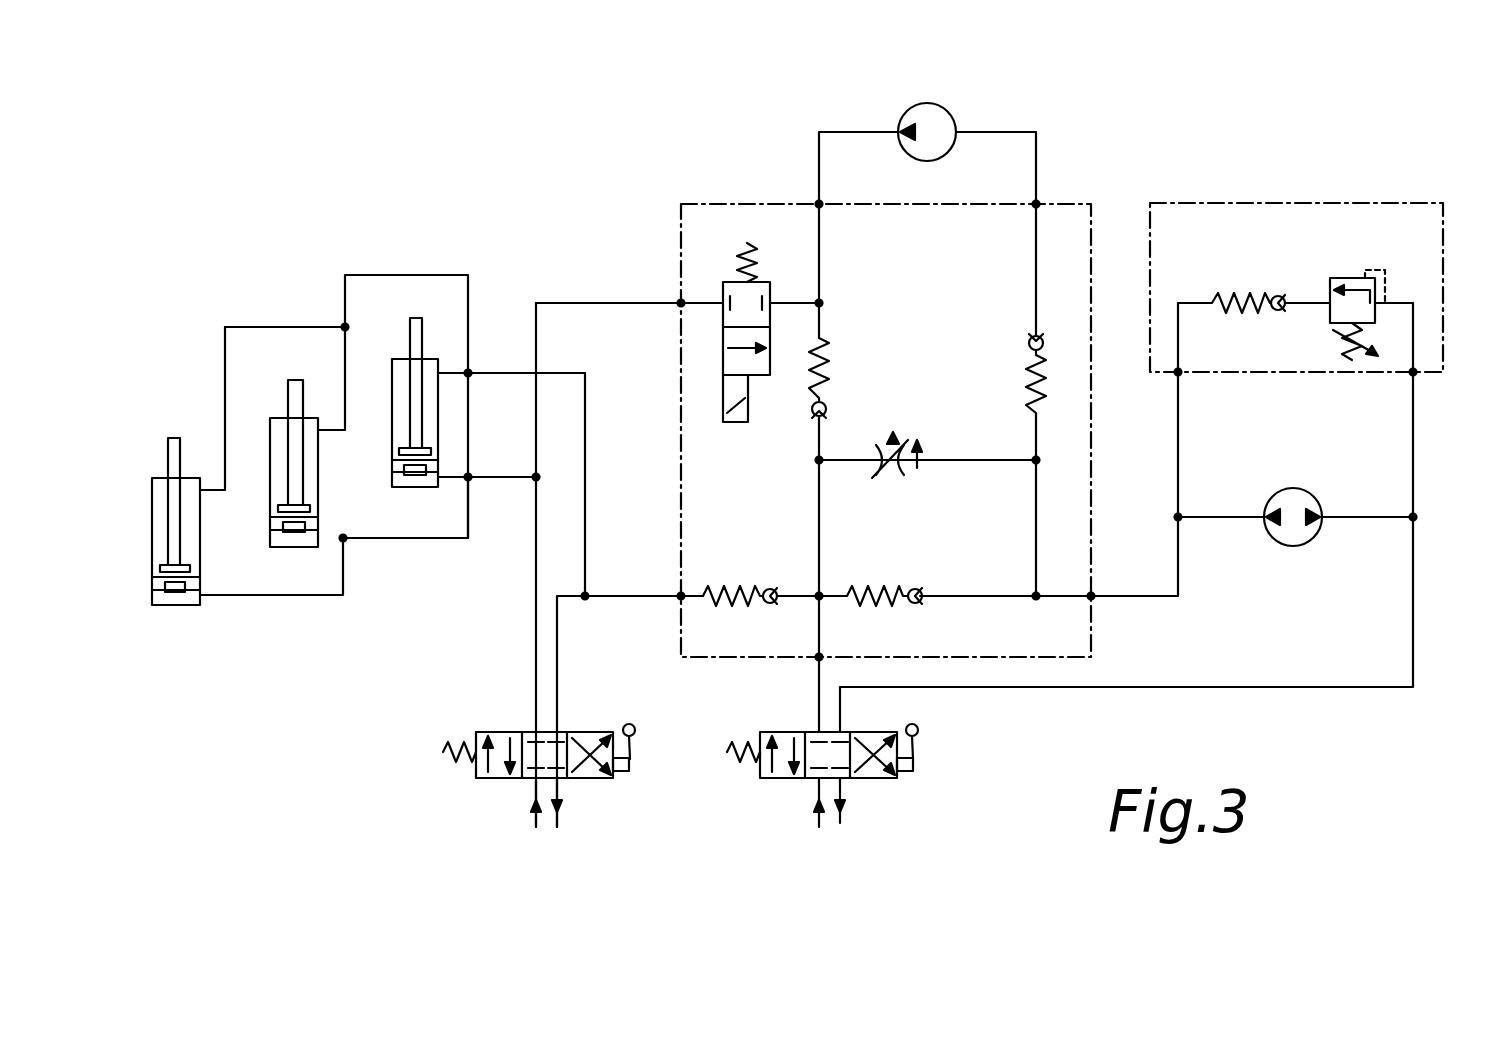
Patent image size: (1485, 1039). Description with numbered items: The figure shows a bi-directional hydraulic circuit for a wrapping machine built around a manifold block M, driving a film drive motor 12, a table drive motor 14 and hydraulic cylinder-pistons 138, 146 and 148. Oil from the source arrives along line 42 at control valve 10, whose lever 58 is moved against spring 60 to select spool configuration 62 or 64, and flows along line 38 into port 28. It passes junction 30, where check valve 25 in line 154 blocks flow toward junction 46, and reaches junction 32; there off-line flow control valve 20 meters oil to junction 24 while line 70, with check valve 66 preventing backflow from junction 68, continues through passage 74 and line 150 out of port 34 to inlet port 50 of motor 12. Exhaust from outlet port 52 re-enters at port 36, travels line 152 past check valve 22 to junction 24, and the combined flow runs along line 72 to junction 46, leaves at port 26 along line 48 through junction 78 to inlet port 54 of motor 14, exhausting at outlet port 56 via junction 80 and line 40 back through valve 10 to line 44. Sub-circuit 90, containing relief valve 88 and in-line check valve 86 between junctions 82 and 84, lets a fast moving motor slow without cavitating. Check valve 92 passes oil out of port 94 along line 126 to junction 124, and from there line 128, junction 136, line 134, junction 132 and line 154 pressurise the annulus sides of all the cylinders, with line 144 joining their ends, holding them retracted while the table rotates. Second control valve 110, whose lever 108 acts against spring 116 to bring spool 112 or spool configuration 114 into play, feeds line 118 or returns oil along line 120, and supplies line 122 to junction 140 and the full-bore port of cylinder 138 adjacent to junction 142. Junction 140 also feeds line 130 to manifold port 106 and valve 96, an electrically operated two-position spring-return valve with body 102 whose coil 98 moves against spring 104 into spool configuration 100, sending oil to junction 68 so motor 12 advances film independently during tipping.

The control valve 10 is at (872, 780).
The film drive motor 12 is at (945, 111).
The table drive motor 14 is at (1313, 496).
The off-line flow control valve 20 is at (918, 448).
The check valve 22 is at (1030, 392).
The junction 24 is at (1040, 463).
The check valve 25 is at (920, 590).
The manifold port 26 is at (1095, 592).
The manifold port 28 is at (817, 657).
The junction 30 is at (822, 592).
The junction 32 is at (815, 462).
The manifold port 34 is at (886, 404).
The manifold port 36 is at (1040, 203).
The line 38 is at (818, 696).
The line 40 is at (1208, 687).
The line 42 is at (812, 822).
The line 44 is at (843, 822).
The junction 46 is at (1035, 590).
The line 48 is at (1185, 596).
The inlet port 50 is at (900, 128).
The outlet port 52 is at (960, 127).
The inlet port 54 is at (1262, 508).
The outlet port 56 is at (1326, 532).
The valve lever 58 is at (920, 740).
The spring 60 is at (727, 752).
The valve spool configuration 62 is at (780, 730).
The valve spool configuration 64 is at (875, 740).
The check valve 66 is at (830, 404).
The junction 68 is at (824, 304).
The line 70 is at (822, 507).
The line 72 is at (1033, 504).
The conduit 74 is at (801, 303).
The junction 78 is at (1175, 514).
The junction 80 is at (1418, 516).
The junction 82 is at (1182, 376).
The junction 84 is at (1410, 376).
The in-line check valve 86 is at (1240, 300).
The pressure relief valve 88 is at (1380, 287).
The sub-circuit 90 is at (1193, 203).
The check valve 92 is at (772, 590).
The manifold port 94 is at (684, 592).
The valve 96 is at (723, 378).
The valve coil 98 is at (748, 411).
The spool configuration 100 is at (723, 347).
The pilot valve body 102 is at (723, 292).
The spring 104 is at (750, 247).
The manifold port 106 is at (680, 306).
The control lever 108 is at (633, 745).
The second control valve 110 is at (588, 780).
The valve spool 112 is at (500, 730).
The spool configuration 114 is at (582, 730).
The spring 116 is at (445, 752).
The line 118 is at (530, 822).
The line 120 is at (559, 822).
The line 122 is at (533, 607).
The junction 124 is at (588, 603).
The line 126 is at (660, 592).
The line 128 is at (610, 432).
The line 130 is at (580, 303).
The junction 132 is at (343, 325).
The line 134 is at (414, 275).
The junction 136 is at (472, 372).
The cylinder-piston 138 is at (440, 440).
The junction 140 is at (530, 477).
The junction 142 is at (470, 482).
The conduit 144 is at (347, 541).
The cylinder-piston 146 is at (318, 510).
The cylinder-piston 148 is at (200, 578).
The line 150 is at (822, 245).
The line 152 is at (1036, 247).
The line 154 is at (225, 395).